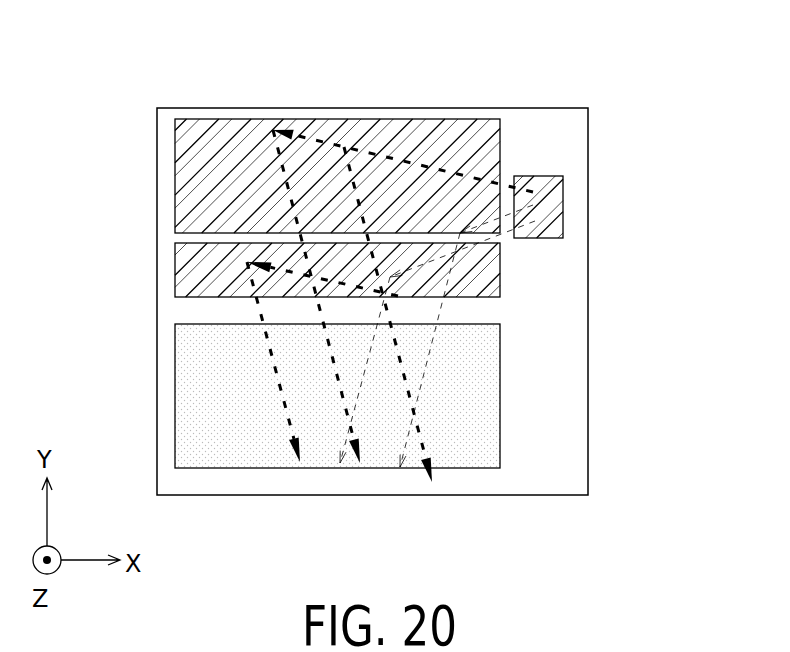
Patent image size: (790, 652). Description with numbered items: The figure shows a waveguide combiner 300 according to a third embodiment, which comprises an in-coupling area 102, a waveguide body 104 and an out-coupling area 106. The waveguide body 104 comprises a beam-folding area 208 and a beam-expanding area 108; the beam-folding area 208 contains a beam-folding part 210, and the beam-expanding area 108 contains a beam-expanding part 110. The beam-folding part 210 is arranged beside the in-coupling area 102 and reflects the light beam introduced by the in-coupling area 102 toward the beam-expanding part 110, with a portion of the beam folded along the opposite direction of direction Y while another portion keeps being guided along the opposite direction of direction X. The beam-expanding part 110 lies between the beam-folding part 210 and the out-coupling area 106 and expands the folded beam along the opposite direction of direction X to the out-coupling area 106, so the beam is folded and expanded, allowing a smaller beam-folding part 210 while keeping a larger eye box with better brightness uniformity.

The waveguide combiner 300 is at (636, 98).
The waveguide body 104 is at (572, 477).
The beam-folding area 208 is at (213, 118).
The beam-folding part 210 is at (253, 140).
The beam-expanding area 108 is at (175, 262).
The beam-expanding part 110 is at (187, 278).
The in-coupling area 102 is at (560, 221).
The out-coupling area 106 is at (259, 457).